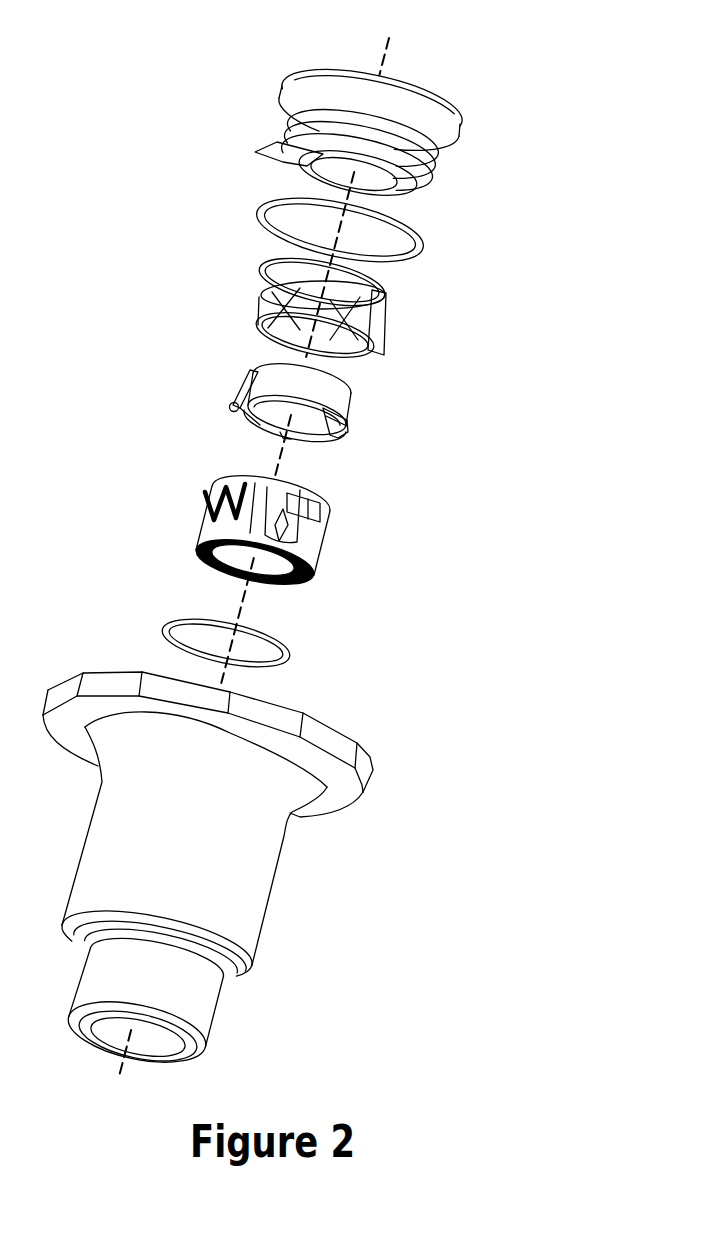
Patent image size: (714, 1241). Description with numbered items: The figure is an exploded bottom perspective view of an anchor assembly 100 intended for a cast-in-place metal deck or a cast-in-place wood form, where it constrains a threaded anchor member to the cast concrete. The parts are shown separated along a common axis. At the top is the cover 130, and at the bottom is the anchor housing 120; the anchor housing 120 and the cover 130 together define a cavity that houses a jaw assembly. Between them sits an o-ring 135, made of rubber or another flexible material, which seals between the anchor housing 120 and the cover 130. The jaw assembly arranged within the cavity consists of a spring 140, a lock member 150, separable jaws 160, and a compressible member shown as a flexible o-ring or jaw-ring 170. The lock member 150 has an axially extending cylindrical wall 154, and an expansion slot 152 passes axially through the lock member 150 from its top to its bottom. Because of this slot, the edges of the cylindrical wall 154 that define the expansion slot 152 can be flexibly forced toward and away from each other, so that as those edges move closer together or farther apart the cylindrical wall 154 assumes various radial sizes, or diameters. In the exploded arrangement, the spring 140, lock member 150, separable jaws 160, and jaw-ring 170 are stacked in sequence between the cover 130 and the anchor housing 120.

The anchor assembly 100 is at (535, 97).
The anchor housing 120 is at (110, 833).
The cover 130 is at (452, 128).
The o-ring 135 is at (262, 214).
The spring 140 is at (258, 311).
The lock member 150 is at (232, 412).
The expansion slot 152 is at (248, 374).
The cylindrical wall 154 is at (332, 402).
The separable jaws 160 is at (215, 528).
The jaw-ring 170 is at (166, 628).